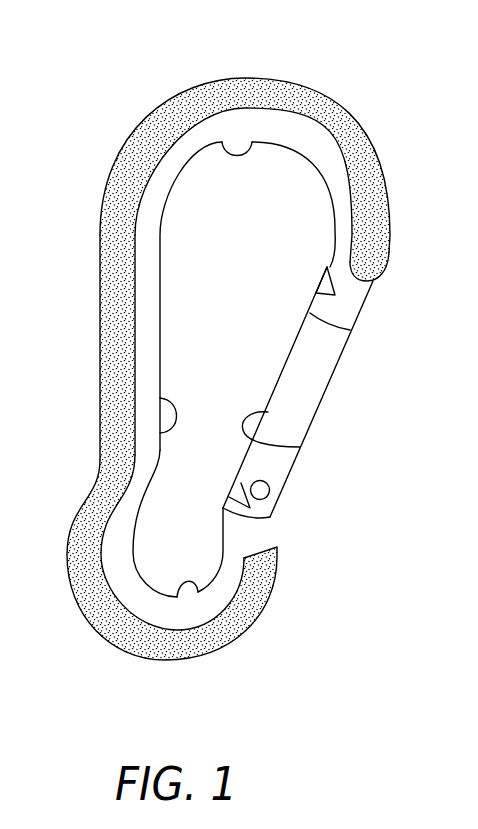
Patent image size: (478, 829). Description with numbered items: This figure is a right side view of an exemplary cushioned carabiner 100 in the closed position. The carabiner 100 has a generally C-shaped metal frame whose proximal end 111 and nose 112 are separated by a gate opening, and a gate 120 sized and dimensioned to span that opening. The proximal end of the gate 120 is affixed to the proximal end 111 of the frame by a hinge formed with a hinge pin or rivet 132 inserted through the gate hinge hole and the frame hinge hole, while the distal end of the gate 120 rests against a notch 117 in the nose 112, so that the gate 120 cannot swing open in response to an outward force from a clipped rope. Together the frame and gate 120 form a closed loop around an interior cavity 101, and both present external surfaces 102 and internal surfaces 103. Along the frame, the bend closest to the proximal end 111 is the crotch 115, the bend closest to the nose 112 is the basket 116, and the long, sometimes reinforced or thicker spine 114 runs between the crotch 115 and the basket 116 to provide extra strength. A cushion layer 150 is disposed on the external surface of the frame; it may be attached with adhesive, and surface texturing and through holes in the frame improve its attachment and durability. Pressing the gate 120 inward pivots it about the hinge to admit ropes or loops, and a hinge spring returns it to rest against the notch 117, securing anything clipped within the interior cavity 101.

The carabiner 100 is at (80, 101).
The interior cavity 101 is at (300, 202).
The external surfaces 102 is at (342, 357).
The internal surfaces 103 is at (300, 447).
The proximal end 111 is at (237, 501).
The nose 112 is at (350, 307).
The spine 114 is at (147, 290).
The crotch 115 is at (197, 590).
The basket 116 is at (227, 146).
The notch 117 is at (328, 285).
The gate 120 is at (302, 397).
The hinge pin or rivet 132 is at (268, 497).
The cushion layer 150 is at (330, 117).